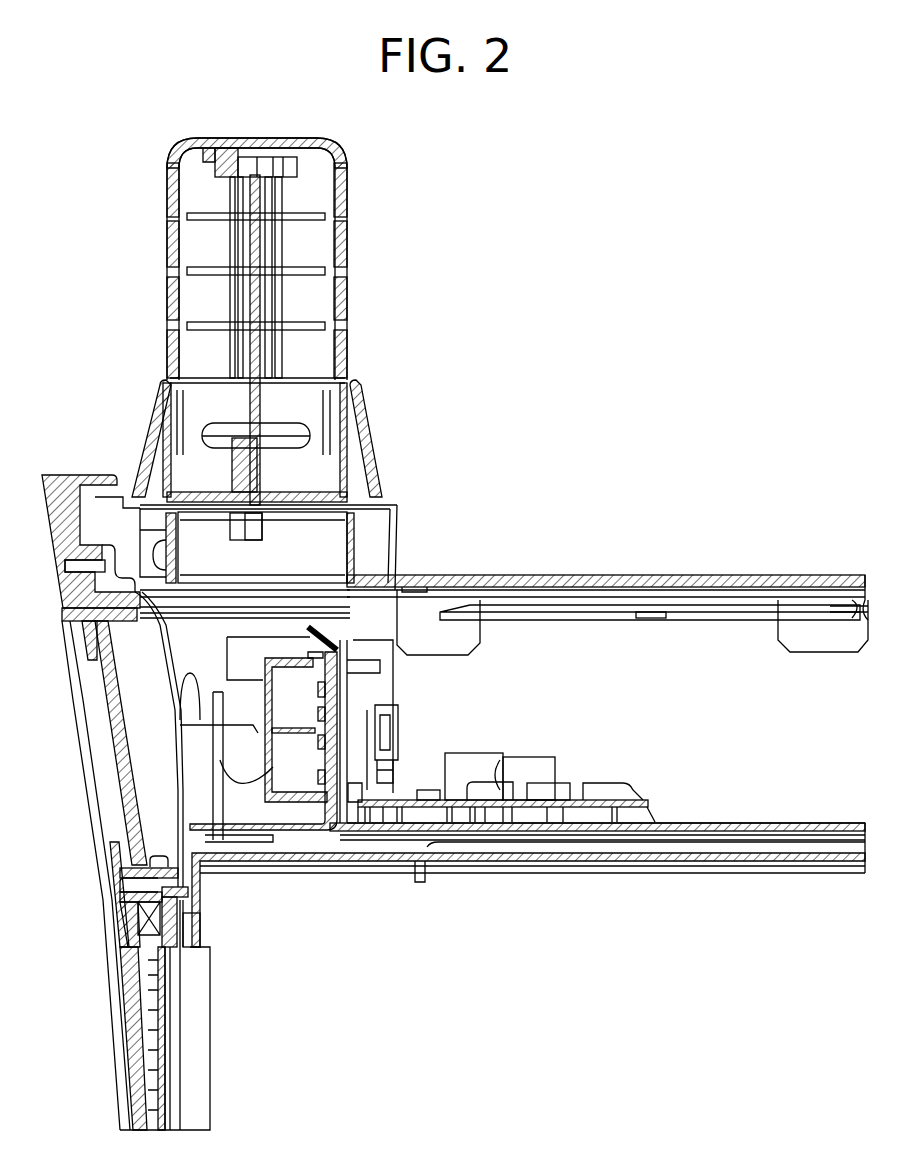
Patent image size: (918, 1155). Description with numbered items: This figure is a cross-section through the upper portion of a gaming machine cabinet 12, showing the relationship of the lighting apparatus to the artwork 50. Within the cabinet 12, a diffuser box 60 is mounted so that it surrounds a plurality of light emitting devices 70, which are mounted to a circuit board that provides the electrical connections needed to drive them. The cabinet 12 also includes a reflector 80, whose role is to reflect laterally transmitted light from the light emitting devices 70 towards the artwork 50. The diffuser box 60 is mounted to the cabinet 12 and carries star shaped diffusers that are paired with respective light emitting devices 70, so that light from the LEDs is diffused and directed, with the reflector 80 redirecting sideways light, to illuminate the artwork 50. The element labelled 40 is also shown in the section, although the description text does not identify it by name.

The cabinet 12 is at (682, 576).
The knob cap 40 is at (348, 232).
The artwork 50 is at (110, 730).
The diffuser box 60 is at (265, 797).
The light emitting devices 70 is at (320, 730).
The reflector 80 is at (312, 628).